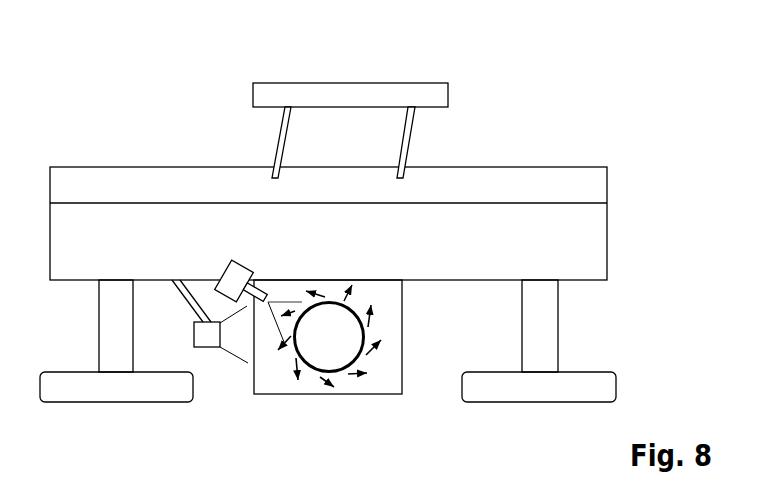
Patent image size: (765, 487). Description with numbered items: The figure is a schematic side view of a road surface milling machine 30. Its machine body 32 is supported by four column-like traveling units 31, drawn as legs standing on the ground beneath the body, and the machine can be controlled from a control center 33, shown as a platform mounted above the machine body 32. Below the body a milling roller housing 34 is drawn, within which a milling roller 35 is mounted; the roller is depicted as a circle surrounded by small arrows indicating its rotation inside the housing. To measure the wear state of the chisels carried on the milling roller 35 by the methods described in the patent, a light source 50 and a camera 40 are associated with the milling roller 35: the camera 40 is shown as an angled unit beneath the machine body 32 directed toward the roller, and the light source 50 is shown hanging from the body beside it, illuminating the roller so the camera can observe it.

The road surface milling machine 30 is at (355, 239).
The traveling units 31 is at (547, 326).
The machine body 32 is at (593, 242).
The control center 33 is at (352, 93).
The milling roller housing 34 is at (402, 325).
The milling roller 35 is at (362, 362).
The camera 40 is at (250, 261).
The light source 50 is at (211, 370).